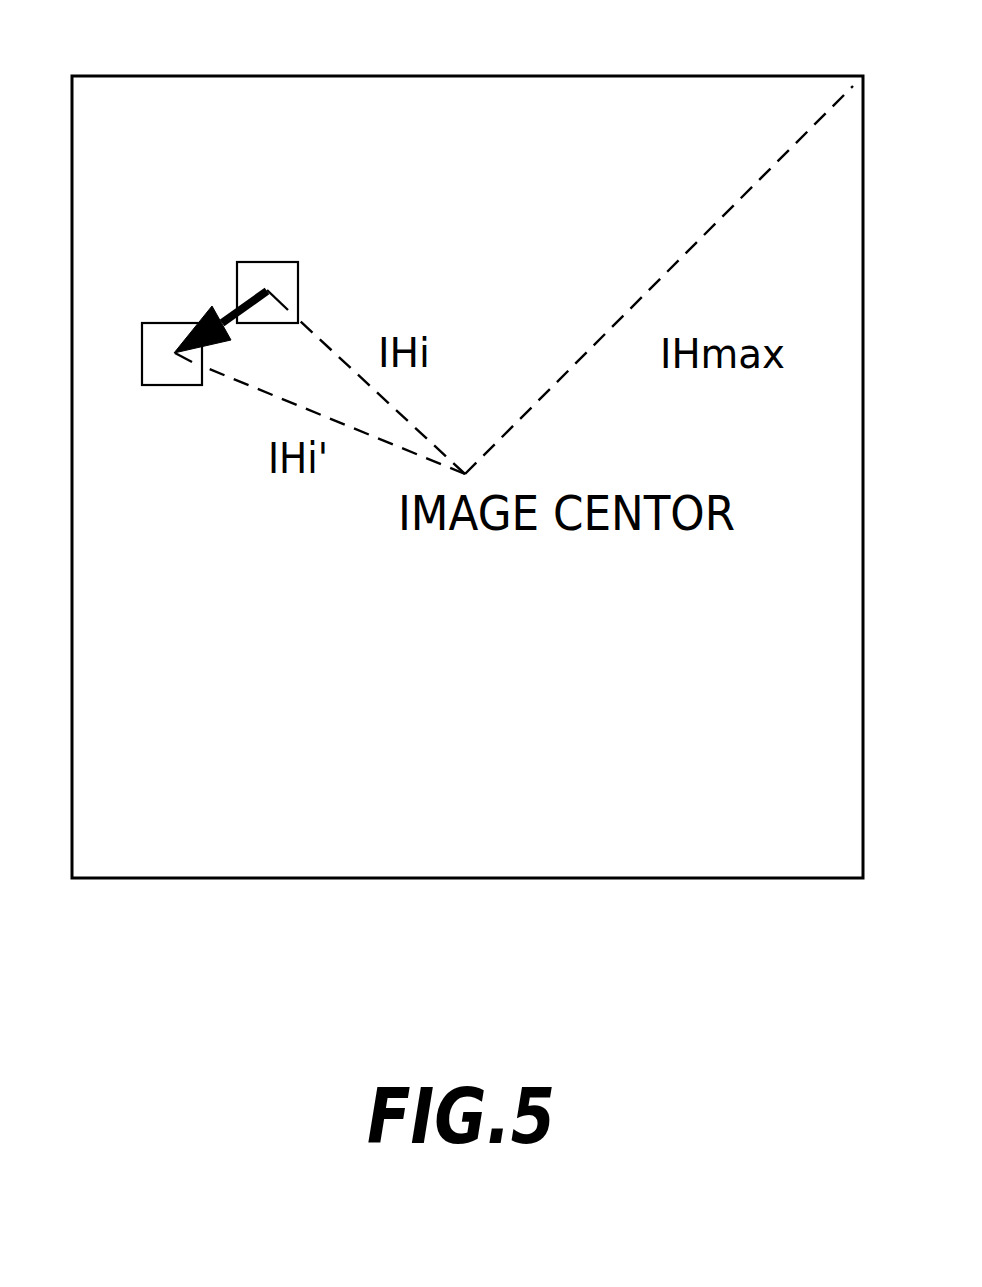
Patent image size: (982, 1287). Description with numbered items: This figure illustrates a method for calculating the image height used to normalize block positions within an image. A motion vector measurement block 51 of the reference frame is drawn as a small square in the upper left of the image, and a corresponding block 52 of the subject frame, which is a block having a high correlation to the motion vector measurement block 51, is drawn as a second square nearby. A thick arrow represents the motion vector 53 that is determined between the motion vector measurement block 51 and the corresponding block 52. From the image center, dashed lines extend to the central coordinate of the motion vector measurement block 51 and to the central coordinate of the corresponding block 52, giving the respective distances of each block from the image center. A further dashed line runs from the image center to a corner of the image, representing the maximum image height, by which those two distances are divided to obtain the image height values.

The motion vector measurement block 51 is at (263, 273).
The corresponding block 52 is at (173, 376).
The motion vector 53 is at (227, 313).